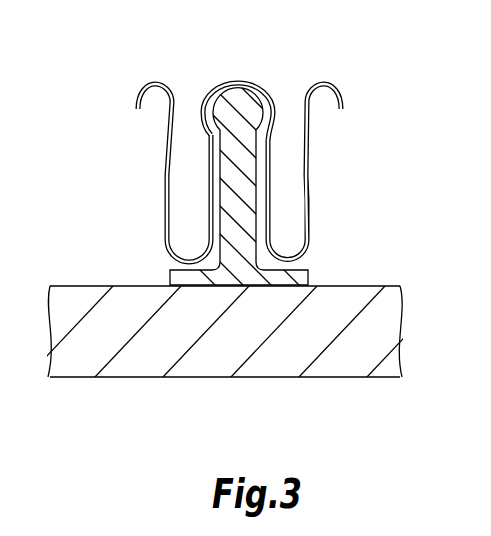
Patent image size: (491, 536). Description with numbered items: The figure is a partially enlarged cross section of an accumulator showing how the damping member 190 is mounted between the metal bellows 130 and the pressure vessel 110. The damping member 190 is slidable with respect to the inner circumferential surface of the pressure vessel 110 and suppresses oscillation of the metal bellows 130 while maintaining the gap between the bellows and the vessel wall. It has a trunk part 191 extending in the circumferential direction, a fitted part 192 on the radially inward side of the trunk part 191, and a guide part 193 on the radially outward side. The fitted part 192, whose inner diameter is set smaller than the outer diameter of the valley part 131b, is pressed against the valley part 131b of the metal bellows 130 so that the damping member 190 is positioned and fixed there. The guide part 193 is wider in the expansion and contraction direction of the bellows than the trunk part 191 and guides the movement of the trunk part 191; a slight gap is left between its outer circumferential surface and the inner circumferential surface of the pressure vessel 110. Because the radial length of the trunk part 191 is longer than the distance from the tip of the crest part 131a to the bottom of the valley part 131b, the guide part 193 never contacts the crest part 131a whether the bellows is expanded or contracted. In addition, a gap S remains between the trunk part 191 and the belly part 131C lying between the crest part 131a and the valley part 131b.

The pressure vessel 110 is at (358, 355).
The metal bellows 130 is at (299, 139).
The crest part 131a is at (300, 262).
The valley part 131b is at (212, 78).
The belly part 131C is at (290, 238).
The damping member 190 is at (232, 156).
The trunk part 191 is at (238, 175).
The fitted part 192 is at (248, 95).
The guide part 193 is at (310, 278).
The gap S is at (214, 122).